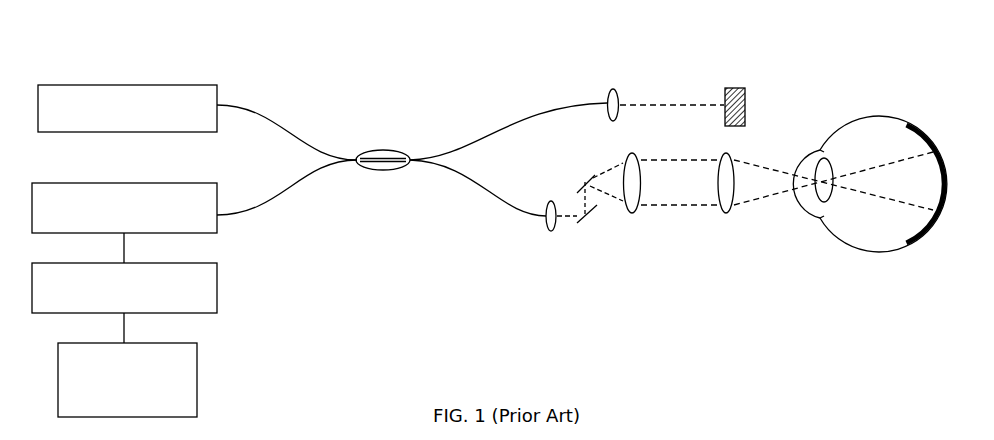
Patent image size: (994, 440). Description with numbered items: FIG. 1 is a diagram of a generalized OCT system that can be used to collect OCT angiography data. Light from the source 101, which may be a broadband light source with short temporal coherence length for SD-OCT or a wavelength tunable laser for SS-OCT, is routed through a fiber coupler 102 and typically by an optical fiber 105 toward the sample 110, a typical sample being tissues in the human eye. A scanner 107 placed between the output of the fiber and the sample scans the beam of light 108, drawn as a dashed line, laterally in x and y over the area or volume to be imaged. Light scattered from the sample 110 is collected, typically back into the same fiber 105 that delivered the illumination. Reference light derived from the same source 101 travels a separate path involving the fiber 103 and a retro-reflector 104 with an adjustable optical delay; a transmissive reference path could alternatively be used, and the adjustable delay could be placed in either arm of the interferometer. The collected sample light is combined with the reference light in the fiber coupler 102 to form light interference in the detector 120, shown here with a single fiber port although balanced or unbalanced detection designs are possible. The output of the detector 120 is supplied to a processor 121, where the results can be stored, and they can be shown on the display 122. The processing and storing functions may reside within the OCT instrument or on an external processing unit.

The light source 101 is at (125, 80).
The fiber coupler 102 is at (374, 168).
The fiber 103 is at (510, 115).
The retro-reflector 104 is at (742, 73).
The optical fiber 105 is at (490, 218).
The scanner 107 is at (598, 225).
The beam of light 108 is at (873, 207).
The sample 110 is at (900, 113).
The detector 120 is at (225, 192).
The processor 121 is at (225, 290).
The display 122 is at (207, 381).